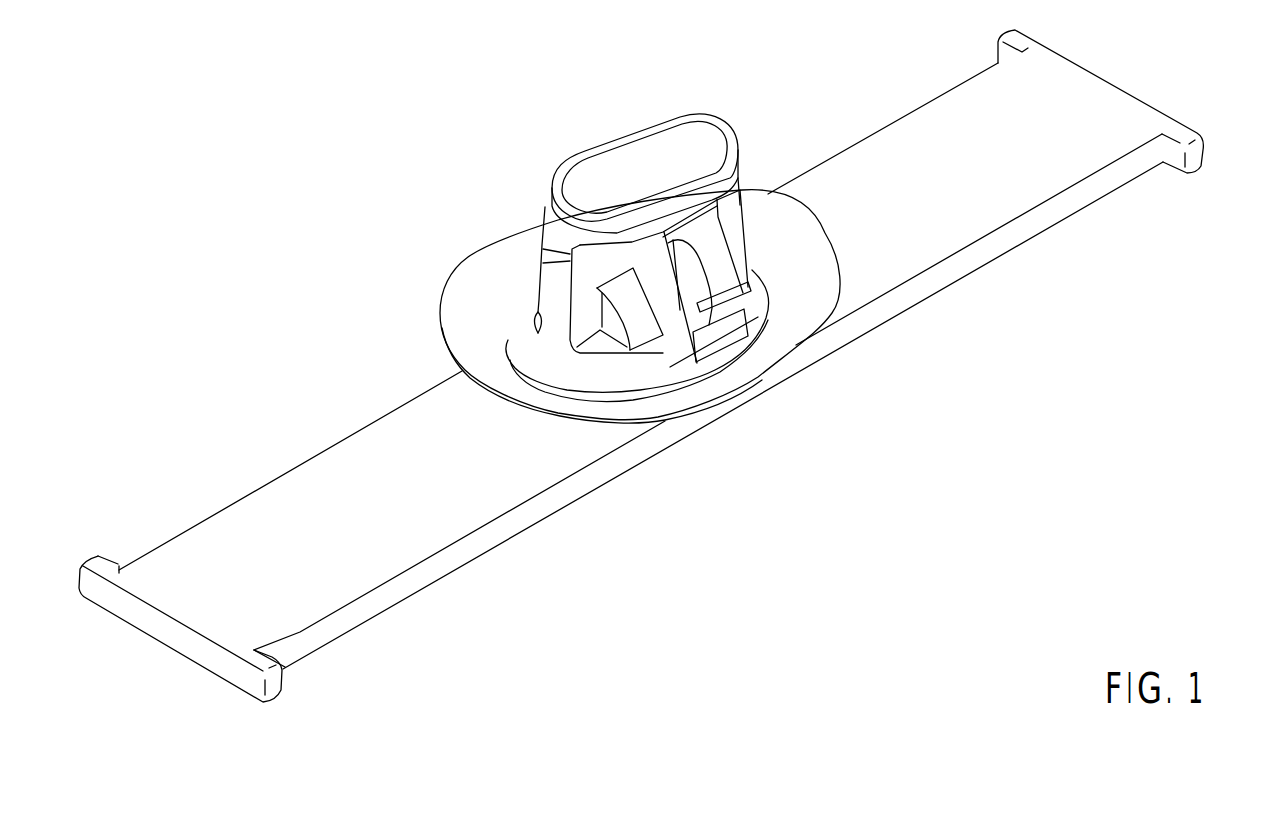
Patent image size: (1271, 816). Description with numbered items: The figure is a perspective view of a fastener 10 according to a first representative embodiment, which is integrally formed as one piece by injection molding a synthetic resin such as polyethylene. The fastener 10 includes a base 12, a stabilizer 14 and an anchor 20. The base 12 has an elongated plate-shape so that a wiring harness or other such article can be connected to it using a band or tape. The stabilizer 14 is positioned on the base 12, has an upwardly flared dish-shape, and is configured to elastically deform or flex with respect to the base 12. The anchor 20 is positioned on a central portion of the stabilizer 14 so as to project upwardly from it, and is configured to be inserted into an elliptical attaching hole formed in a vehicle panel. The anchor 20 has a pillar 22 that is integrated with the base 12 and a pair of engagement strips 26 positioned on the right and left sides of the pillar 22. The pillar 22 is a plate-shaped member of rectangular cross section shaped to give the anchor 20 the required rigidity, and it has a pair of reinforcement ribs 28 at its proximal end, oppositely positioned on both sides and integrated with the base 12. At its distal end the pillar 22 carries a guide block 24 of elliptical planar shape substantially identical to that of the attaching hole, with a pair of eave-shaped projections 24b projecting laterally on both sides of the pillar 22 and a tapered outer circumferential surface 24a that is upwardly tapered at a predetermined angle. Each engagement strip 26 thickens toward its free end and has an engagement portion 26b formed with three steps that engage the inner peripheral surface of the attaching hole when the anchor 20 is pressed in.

The fastener 10 is at (280, 258).
The base 12 is at (940, 142).
The stabilizer 14 is at (812, 303).
The anchor 20 is at (687, 106).
The pillar 22 is at (560, 286).
The guide block 24 is at (597, 176).
The tapered outer circumferential surface 24a is at (741, 157).
The eave-shaped projections 24b is at (683, 205).
The engagement strip 26 is at (720, 267).
The engagement portion 26b is at (722, 312).
The reinforcement ribs 28 is at (637, 315).